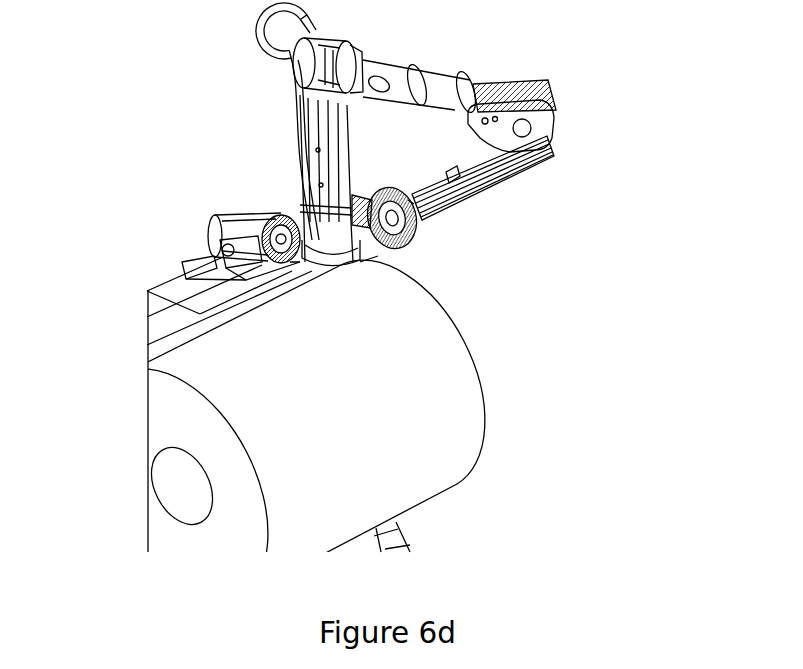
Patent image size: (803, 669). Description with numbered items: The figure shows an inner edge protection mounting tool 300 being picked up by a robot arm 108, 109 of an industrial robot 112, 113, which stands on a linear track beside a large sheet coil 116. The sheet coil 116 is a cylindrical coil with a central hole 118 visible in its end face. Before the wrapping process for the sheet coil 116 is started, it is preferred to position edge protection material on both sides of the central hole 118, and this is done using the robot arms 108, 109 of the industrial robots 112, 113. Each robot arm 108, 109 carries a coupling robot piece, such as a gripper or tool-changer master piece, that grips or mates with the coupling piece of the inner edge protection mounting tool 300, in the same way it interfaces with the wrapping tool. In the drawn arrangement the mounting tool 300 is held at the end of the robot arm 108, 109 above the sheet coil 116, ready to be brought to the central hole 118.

The robot arm 108 is at (567, 162).
The robot arm 109 is at (546, 140).
The industrial robot 112 is at (330, 141).
The industrial robot 113 is at (300, 180).
The sheet coil 116 is at (268, 447).
The central hole 118 is at (163, 467).
The inner edge protection mounting tool 300 is at (418, 228).